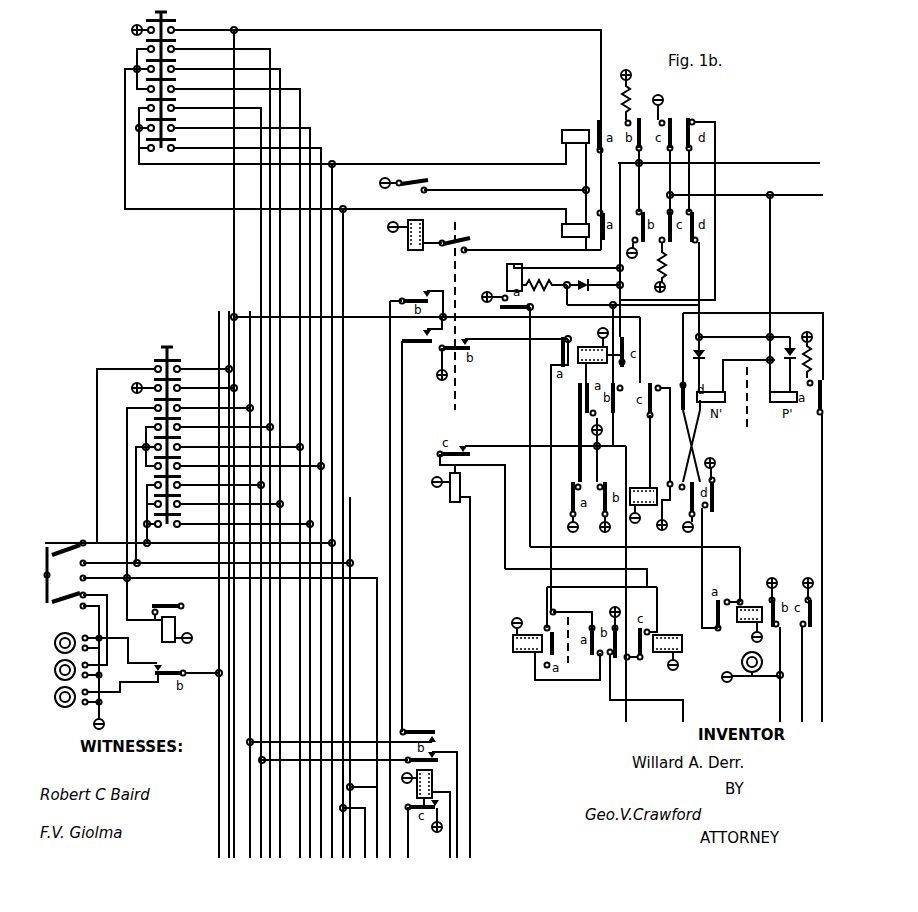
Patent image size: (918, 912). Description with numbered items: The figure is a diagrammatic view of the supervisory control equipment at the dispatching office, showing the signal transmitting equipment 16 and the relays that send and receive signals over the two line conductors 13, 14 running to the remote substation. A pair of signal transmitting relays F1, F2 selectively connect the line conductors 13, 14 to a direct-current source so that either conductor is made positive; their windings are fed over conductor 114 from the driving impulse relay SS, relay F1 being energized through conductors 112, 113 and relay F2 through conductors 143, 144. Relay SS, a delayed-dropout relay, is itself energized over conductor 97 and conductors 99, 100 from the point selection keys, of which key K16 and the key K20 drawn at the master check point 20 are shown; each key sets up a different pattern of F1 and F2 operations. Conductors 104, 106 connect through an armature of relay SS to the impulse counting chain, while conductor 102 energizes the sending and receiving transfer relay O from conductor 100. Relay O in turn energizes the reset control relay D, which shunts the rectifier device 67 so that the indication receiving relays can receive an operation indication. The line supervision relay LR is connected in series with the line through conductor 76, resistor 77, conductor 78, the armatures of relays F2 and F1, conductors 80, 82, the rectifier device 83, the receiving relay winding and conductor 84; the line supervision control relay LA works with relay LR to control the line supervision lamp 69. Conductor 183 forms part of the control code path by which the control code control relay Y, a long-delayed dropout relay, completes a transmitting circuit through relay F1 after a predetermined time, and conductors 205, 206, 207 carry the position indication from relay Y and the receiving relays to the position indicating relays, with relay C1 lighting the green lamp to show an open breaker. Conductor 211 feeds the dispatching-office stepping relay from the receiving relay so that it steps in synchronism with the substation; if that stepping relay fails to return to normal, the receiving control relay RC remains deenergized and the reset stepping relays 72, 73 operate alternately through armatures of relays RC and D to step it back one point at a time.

The line conductor 13 is at (748, 161).
The line conductor 14 is at (756, 193).
The signal transmitting equipment 16 is at (505, 140).
The master check key point 20 is at (116, 58).
The rectifier device 67 is at (593, 278).
The line supervision lamp 69 is at (750, 674).
The reset stepping relay 72 is at (663, 653).
The reset stepping relay 73 is at (525, 653).
The conductor 76 is at (578, 268).
The resistor 77 is at (544, 279).
The conductor 78 is at (567, 305).
The conductor 80 is at (702, 270).
The conductor 82 is at (722, 342).
The rectifier device 83 is at (790, 345).
The conductor 84 is at (770, 282).
The conductor 97 is at (550, 250).
The conductor 99 is at (452, 30).
The conductor 100 is at (234, 243).
The conductor 102 is at (640, 338).
The conductor 104 is at (390, 425).
The conductor 106 is at (361, 317).
The conductor 112 is at (350, 480).
The conductor 113 is at (500, 205).
The conductor 114 is at (499, 195).
The conductor 143 is at (446, 164).
The conductor 144 is at (333, 190).
The conductor 183 is at (366, 786).
The conductor 205 is at (367, 758).
The conductor 206 is at (460, 772).
The conductor 207 is at (818, 530).
The conductor 211 is at (630, 552).
The relay K20 is at (176, 23).
The point selection key K16 is at (160, 358).
The signal transmitting relay F1 is at (562, 227).
The signal transmitting relay F2 is at (576, 130).
The driving impulse relay SS is at (429, 246).
The line supervision relay LR is at (506, 273).
The receiving control relay RC is at (450, 502).
The relay C1 is at (177, 634).
The reset control relay D is at (592, 347).
The sending and receiving transfer relay O is at (646, 488).
The line supervision control relay LA is at (746, 623).
The control code control relay Y is at (433, 781).